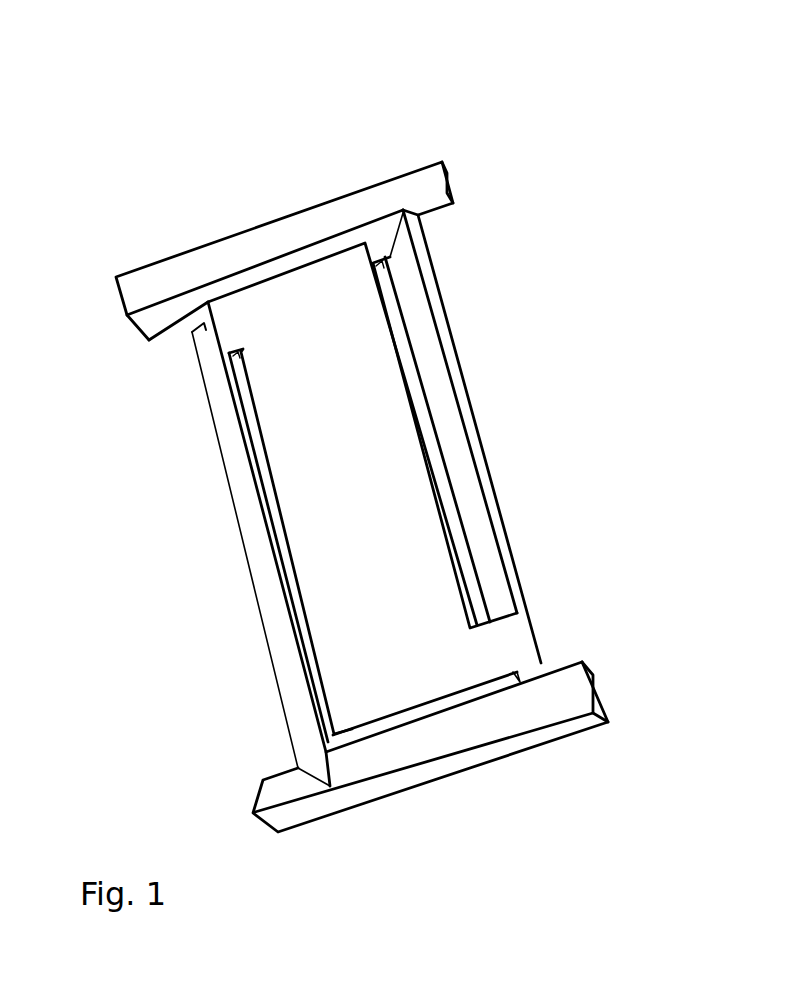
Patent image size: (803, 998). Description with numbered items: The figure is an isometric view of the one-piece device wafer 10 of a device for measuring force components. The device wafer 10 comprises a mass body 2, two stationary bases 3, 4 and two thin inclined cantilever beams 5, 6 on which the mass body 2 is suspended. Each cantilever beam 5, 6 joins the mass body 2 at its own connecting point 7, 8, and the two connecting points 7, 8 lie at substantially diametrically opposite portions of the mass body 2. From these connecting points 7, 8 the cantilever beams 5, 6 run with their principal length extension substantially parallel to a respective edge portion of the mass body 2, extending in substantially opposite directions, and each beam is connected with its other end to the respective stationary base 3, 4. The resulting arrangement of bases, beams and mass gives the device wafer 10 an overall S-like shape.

The device wafer 10 is at (443, 93).
The mass body 2 is at (366, 427).
The stationary base 3 is at (411, 747).
The stationary base 4 is at (301, 233).
The cantilever beam 5 is at (245, 490).
The cantilever beam 6 is at (436, 354).
The connecting point 7 is at (215, 342).
The connecting point 8 is at (520, 614).